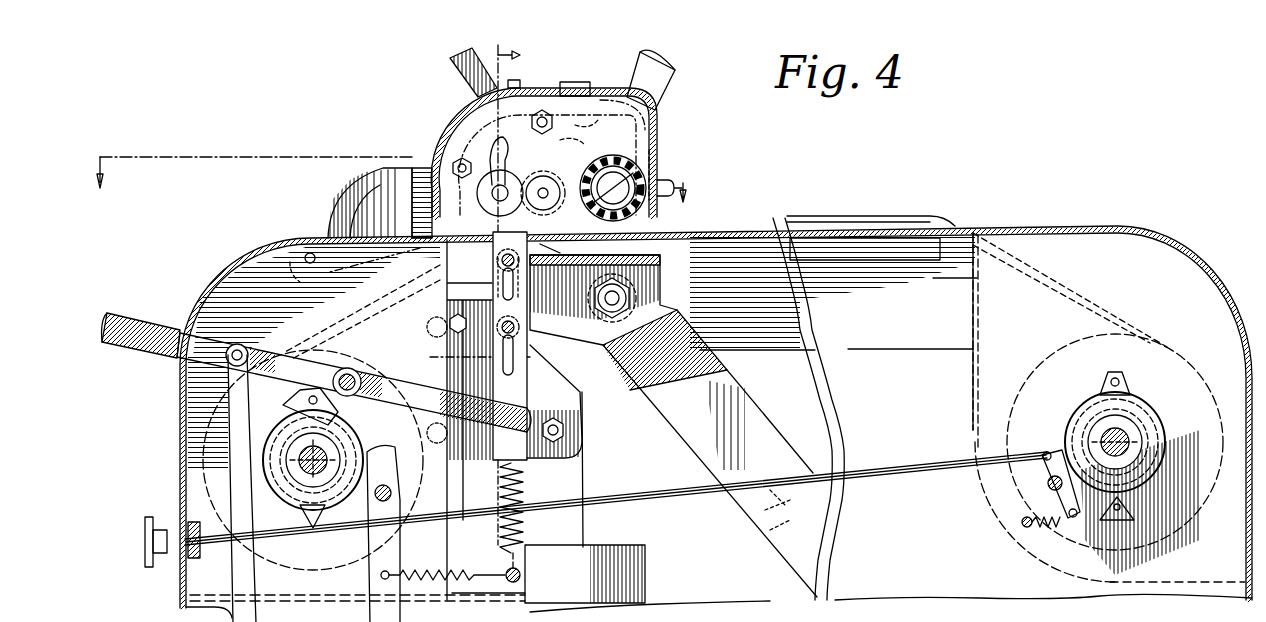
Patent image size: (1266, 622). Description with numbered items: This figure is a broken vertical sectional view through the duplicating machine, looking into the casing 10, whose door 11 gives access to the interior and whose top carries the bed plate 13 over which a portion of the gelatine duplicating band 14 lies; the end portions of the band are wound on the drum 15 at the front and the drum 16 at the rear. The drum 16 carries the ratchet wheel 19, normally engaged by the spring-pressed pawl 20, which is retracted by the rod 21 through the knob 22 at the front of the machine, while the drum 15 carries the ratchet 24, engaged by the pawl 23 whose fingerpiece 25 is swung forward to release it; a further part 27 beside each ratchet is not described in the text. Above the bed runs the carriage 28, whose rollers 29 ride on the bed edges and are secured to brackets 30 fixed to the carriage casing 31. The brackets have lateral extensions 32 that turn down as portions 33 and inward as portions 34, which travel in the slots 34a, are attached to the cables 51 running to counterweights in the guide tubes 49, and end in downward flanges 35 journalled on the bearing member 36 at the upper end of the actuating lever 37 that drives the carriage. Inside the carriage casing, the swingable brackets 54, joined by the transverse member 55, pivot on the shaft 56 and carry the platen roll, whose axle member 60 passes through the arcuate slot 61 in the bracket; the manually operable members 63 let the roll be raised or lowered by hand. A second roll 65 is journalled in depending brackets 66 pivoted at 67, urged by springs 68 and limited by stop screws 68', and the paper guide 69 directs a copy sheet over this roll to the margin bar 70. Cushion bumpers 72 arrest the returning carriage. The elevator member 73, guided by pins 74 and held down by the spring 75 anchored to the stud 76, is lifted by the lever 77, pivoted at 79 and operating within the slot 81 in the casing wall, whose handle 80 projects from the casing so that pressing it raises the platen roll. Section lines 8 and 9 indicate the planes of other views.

The section line 8 is at (499, 143).
The section line 9 is at (391, 165).
The casing 10 is at (943, 604).
The door 11 is at (722, 598).
The bed plate 13 is at (858, 216).
The duplicating band 14 is at (830, 216).
The drum 15 is at (366, 364).
The drum 16 is at (1170, 355).
The ratchet wheel 19 is at (1074, 415).
The pawl 20 is at (1042, 470).
The rod 21 is at (877, 472).
The knob 22 is at (150, 517).
The pawl 23 is at (393, 462).
The ratchet wheel 24 is at (350, 435).
The fingerpiece 25 is at (357, 608).
The pawl 27 is at (1164, 386).
The carriage 28 is at (440, 120).
The anti-friction rollers 29 is at (625, 152).
The brackets 30 is at (640, 110).
The carriage casing 31 is at (476, 102).
The lateral extensions 32 is at (676, 198).
The downward portions 33 is at (662, 240).
The inward portions 34 is at (603, 300).
The slots 34a is at (957, 228).
The downward flanges 35 is at (650, 300).
The bearing member 36 is at (655, 280).
The actuating lever 37 is at (740, 415).
The guide tubes 49 is at (646, 566).
The cables 51 is at (600, 255).
The swingable brackets 54 is at (573, 132).
The transverse member 55 is at (622, 160).
The shaft 56 is at (556, 176).
The axle member 60 is at (492, 195).
The arcuate slot 61 is at (496, 150).
The manually operable members 63 is at (455, 62).
The second roll 65 is at (563, 246).
The depending brackets 66 is at (570, 130).
The pivot 67 is at (542, 108).
The springs 68 is at (582, 71).
The adjustable stop screws 68' is at (521, 73).
The paper guide 69 is at (668, 72).
The margin bar 70 is at (418, 212).
The cushion bumpers 72 is at (416, 167).
The elevator member 73 is at (527, 388).
The pins 74 is at (500, 262).
The spring 75 is at (524, 490).
The stud 76 is at (522, 572).
The lever 77 is at (430, 390).
The pivot 79 is at (348, 368).
The handle 80 is at (140, 318).
The slot 81 is at (180, 402).